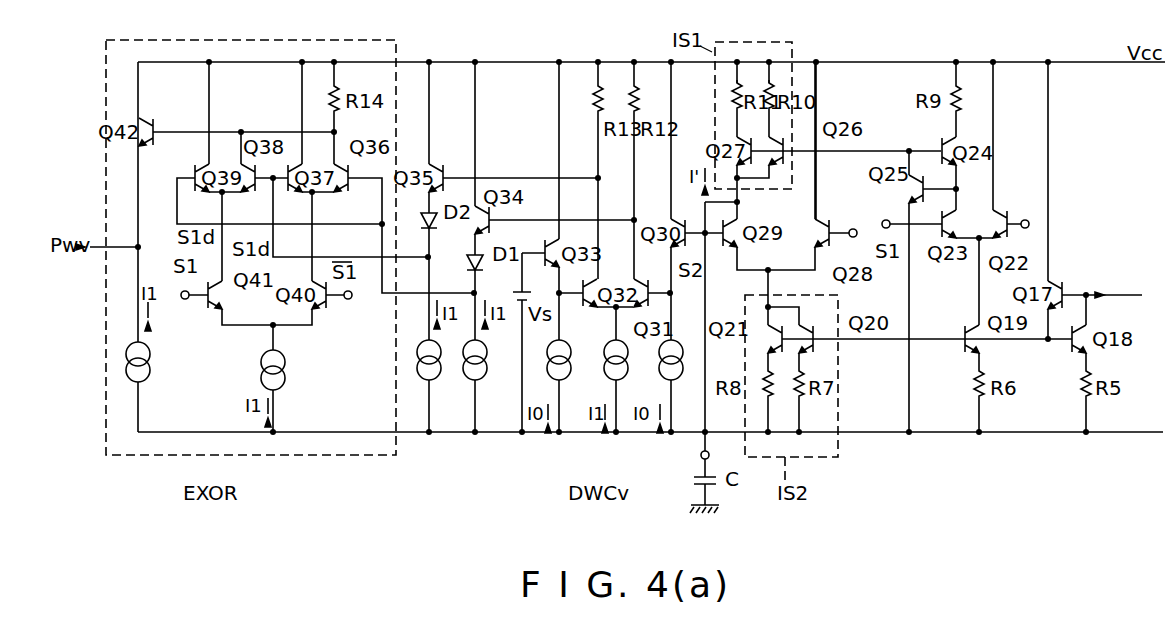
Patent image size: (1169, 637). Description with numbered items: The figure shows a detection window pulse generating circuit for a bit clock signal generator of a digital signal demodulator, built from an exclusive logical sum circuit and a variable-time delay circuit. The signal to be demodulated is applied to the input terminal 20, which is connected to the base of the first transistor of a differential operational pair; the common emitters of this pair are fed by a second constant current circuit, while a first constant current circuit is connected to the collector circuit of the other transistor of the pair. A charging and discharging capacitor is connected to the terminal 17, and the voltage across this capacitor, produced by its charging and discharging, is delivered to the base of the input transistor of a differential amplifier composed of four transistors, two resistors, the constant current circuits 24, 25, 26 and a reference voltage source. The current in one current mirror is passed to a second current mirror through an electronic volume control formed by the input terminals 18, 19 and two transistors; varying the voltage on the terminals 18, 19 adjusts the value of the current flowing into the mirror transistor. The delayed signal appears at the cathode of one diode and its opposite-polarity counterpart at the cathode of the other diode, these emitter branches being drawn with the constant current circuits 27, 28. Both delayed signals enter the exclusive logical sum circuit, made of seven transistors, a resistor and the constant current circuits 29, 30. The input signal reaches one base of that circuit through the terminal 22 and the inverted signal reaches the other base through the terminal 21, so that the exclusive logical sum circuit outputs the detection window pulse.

The terminal 17 is at (709, 455).
The input terminal 18 is at (1025, 220).
The input terminal 19 is at (886, 220).
The input terminal 20 is at (853, 229).
The terminal 21 is at (361, 312).
The terminal 22 is at (190, 311).
The constant current circuit 24 is at (677, 380).
The constant current circuit 25 is at (624, 380).
The constant current circuit 26 is at (567, 380).
The constant current circuit 27 is at (483, 380).
The constant current circuit 28 is at (437, 380).
The constant current circuit 29 is at (285, 372).
The constant current circuit 30 is at (150, 364).